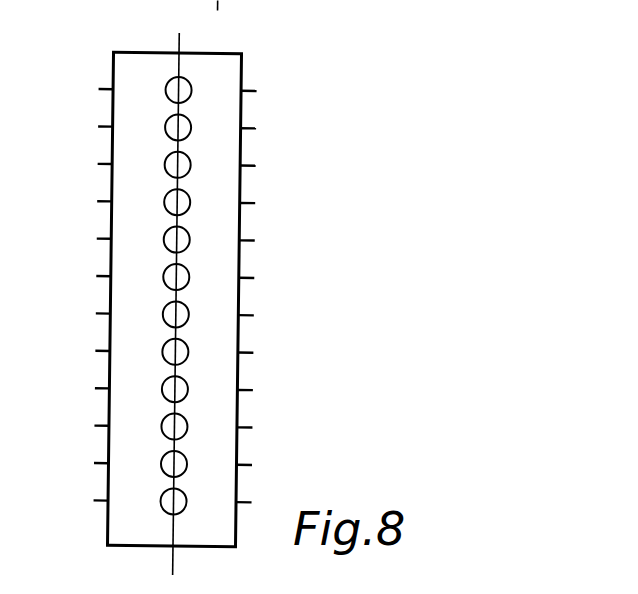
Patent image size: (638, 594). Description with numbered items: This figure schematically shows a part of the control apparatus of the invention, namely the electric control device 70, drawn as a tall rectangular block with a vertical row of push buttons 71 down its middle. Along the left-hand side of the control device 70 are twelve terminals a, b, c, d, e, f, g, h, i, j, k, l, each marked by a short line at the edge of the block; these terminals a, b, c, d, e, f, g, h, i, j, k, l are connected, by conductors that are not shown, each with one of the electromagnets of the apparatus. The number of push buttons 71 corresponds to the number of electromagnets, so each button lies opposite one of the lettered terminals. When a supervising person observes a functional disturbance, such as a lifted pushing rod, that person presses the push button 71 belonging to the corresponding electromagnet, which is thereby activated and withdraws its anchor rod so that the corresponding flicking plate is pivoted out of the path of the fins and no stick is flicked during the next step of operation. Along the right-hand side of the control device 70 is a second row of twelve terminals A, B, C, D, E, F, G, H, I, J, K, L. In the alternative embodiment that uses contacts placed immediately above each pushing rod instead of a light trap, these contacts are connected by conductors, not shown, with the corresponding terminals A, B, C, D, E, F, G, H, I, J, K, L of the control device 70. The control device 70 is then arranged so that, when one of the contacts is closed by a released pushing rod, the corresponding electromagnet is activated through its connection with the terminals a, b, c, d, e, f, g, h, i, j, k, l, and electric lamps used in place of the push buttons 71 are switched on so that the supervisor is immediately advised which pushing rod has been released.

The electric control device 70 is at (224, 52).
The push button 71 is at (190, 84).
The terminal a is at (94, 84).
The terminal b is at (93, 121).
The terminal c is at (94, 159).
The terminal d is at (92, 196).
The terminal e is at (92, 234).
The terminal f is at (93, 271).
The terminal g is at (91, 308).
The terminal h is at (91, 346).
The terminal i is at (93, 383).
The terminal j is at (90, 421).
The terminal k is at (90, 458).
The terminal l is at (92, 495).
The terminal A is at (266, 91).
The terminal B is at (265, 128).
The terminal C is at (265, 166).
The terminal D is at (266, 203).
The terminal E is at (264, 241).
The terminal F is at (264, 278).
The terminal G is at (264, 315).
The terminal H is at (264, 353).
The terminal I is at (260, 390).
The terminal J is at (260, 428).
The terminal K is at (262, 465).
The terminal L is at (261, 502).